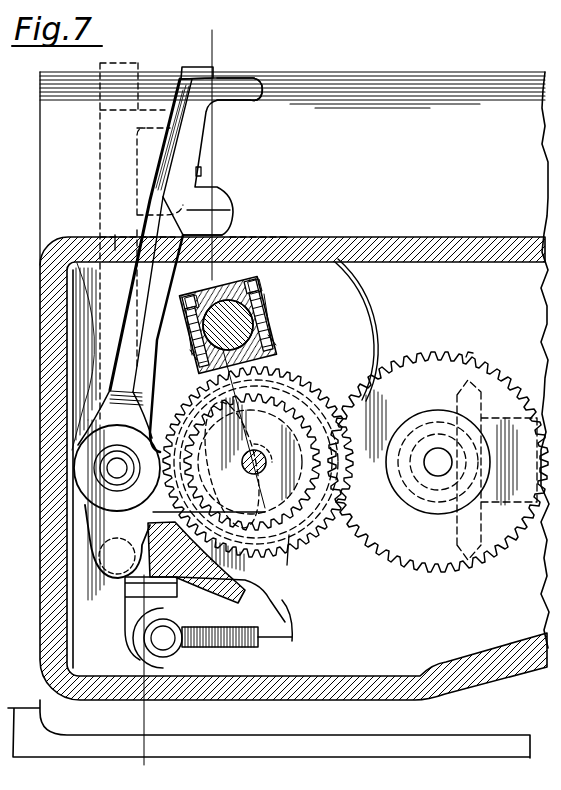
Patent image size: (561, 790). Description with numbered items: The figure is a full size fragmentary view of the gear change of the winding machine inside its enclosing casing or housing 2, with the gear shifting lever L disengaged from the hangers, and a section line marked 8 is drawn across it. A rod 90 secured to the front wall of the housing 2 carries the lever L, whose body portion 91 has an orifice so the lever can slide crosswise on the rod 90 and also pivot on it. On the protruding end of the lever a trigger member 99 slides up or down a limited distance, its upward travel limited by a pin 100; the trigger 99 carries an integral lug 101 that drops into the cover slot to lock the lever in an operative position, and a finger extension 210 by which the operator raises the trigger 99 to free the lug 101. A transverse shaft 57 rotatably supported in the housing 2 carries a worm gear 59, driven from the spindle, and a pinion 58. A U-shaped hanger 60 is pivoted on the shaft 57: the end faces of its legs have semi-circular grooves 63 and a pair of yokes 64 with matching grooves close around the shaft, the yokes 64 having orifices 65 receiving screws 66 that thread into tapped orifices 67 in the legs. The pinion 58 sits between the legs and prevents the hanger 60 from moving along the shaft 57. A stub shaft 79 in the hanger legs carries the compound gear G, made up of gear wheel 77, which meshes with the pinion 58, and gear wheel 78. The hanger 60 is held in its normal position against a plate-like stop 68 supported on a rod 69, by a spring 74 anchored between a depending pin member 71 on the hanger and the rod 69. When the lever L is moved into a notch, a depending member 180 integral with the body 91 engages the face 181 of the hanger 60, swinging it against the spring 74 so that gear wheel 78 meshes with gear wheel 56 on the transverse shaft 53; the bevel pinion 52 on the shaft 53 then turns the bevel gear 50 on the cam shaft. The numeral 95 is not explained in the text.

The enclosing casing or housing 2 is at (462, 72).
The section line 8 is at (201, 397).
The gear changing lever L is at (197, 66).
The trigger member 99 is at (193, 142).
The finger extension 210 is at (250, 92).
The pin 100 is at (202, 174).
The lug 101 is at (224, 231).
The rod 90 is at (150, 222).
The pin 95 is at (108, 234).
The body portion of the lever 91 is at (82, 468).
The depending member 180 is at (95, 560).
The face of the hanger 181 is at (150, 548).
The gear wheel 78 is at (303, 520).
The stop 68 is at (130, 590).
The rod 69 is at (157, 640).
The spring 74 is at (220, 650).
The depending pin member 71 is at (285, 620).
The transverse shaft 57 is at (270, 322).
The U-shaped hanger 60 is at (255, 332).
The orifices 65 is at (192, 294).
The yokes 64 is at (248, 285).
The screws 66 is at (268, 297).
The tapped orifices 67 is at (268, 340).
The worm gear 59 is at (373, 318).
The gear wheel 77 is at (328, 402).
The pinion 58 is at (190, 386).
The semi-circular groove 63 is at (282, 372).
The stub shaft 79 is at (257, 452).
The compound gear G is at (284, 559).
The bevel gear 50 is at (468, 390).
The gear wheel 56 is at (470, 354).
The transverse shaft 53 is at (418, 478).
The bevel pinion 52 is at (432, 488).